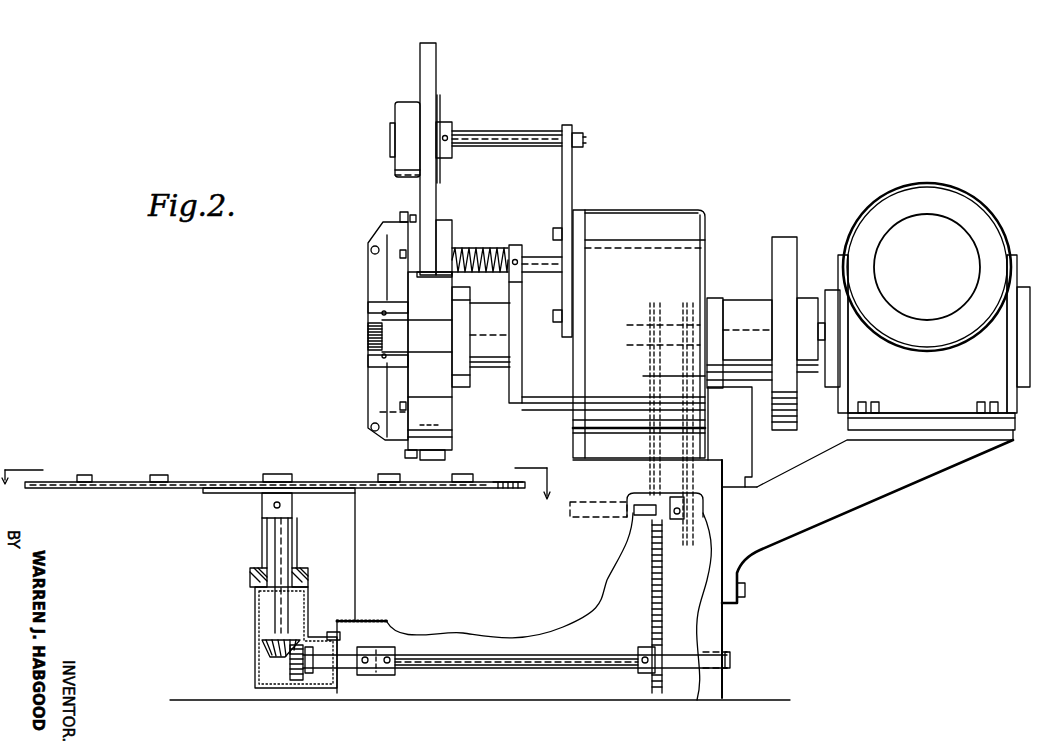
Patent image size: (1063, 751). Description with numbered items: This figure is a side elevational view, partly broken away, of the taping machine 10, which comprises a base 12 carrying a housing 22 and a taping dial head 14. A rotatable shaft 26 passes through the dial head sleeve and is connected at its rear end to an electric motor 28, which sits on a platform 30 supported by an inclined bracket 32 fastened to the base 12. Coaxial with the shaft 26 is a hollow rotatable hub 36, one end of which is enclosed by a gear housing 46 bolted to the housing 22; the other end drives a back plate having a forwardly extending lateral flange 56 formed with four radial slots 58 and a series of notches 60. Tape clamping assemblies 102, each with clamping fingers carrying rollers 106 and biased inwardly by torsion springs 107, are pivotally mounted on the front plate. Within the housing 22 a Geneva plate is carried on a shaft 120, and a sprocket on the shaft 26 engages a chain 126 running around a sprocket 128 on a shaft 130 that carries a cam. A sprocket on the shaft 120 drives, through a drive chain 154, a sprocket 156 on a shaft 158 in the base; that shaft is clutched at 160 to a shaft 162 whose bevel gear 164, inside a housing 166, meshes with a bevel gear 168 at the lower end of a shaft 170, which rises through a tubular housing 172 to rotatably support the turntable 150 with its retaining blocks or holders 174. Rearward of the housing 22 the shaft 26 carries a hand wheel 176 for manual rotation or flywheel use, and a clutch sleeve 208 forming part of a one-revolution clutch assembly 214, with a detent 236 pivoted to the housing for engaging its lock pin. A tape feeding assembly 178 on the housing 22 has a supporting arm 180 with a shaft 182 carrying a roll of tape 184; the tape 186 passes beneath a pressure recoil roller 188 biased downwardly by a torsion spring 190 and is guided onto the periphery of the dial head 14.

The taping machine 10 is at (309, 361).
The base 12 is at (724, 636).
The taping dial head 14 is at (382, 226).
The housing 22 is at (662, 210).
The rotatable shaft 26 is at (680, 322).
The electric motor 28 is at (1000, 241).
The platform 30 is at (968, 420).
The inclined bracket 32 is at (878, 490).
The hollow rotatable hub 36 is at (497, 362).
The gear housing 46 is at (550, 405).
The lateral flange 56 is at (445, 432).
The radial slots 58 is at (437, 340).
The notch 60 is at (427, 396).
The tape clamping assembly 102 is at (372, 316).
The rollers 106 is at (430, 462).
The torsion springs 107 is at (370, 345).
The shaft 120 is at (637, 322).
The chain 126 is at (692, 478).
The sprocket 128 is at (685, 540).
The shaft 130 is at (636, 515).
The turntable 150 is at (193, 481).
The drive chain 154 is at (651, 592).
The sprocket 156 is at (652, 686).
The shaft 158 is at (605, 653).
The clutch 160 is at (380, 648).
The shaft 162 is at (350, 672).
The bevel gear 164 is at (298, 681).
The housing 166 is at (255, 652).
The bevel gear 168 is at (268, 660).
The shaft 170 is at (282, 609).
The tubular housing 172 is at (297, 542).
The retaining blocks or holders 174 is at (152, 474).
The hand wheel 176 is at (790, 251).
The tape feeding assembly 178 is at (458, 103).
The supporting arm 180 is at (566, 177).
The shaft 182 is at (533, 134).
The roll of tape 184 is at (420, 74).
The tape 186 is at (428, 201).
The pressure recoil roller 188 is at (440, 242).
The torsion spring 190 is at (470, 255).
The clutch sleeve 208 is at (738, 300).
The one-revolution clutch assembly 214 is at (745, 488).
The detent 236 is at (654, 370).